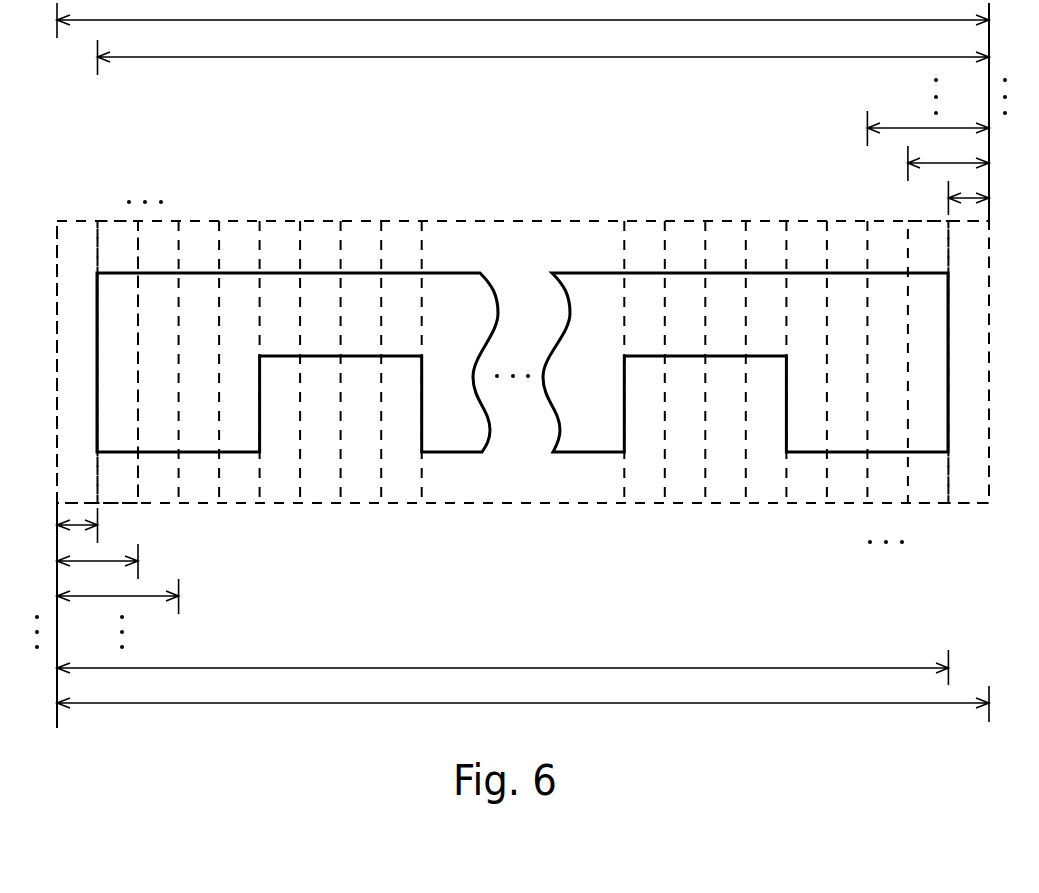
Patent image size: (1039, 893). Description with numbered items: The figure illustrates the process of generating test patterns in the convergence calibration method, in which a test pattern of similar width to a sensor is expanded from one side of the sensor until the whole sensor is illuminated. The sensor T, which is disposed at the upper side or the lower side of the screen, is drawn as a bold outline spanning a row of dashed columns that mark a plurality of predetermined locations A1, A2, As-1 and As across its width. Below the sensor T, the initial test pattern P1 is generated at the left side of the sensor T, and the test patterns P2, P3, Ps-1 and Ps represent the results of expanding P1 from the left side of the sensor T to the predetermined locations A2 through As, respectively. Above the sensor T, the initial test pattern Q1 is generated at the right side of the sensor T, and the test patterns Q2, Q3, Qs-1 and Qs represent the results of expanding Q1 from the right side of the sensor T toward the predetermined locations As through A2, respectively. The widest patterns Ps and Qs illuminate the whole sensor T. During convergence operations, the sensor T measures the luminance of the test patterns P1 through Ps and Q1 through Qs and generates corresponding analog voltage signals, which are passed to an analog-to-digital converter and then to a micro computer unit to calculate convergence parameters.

The sensor T is at (950, 349).
The predetermined location A1 is at (70, 342).
The predetermined location A2 is at (109, 342).
The predetermined location As-1 is at (945, 388).
The predetermined location As is at (951, 505).
The initial test pattern Q1 is at (986, 199).
The test pattern Q2 is at (967, 164).
The test pattern Q3 is at (946, 129).
The test pattern Qs-1 is at (569, 58).
The test pattern Qs is at (540, 22).
The initial test pattern P1 is at (63, 524).
The test pattern P2 is at (83, 559).
The test pattern P3 is at (103, 594).
The test pattern Ps-1 is at (481, 666).
The test pattern Ps is at (508, 702).